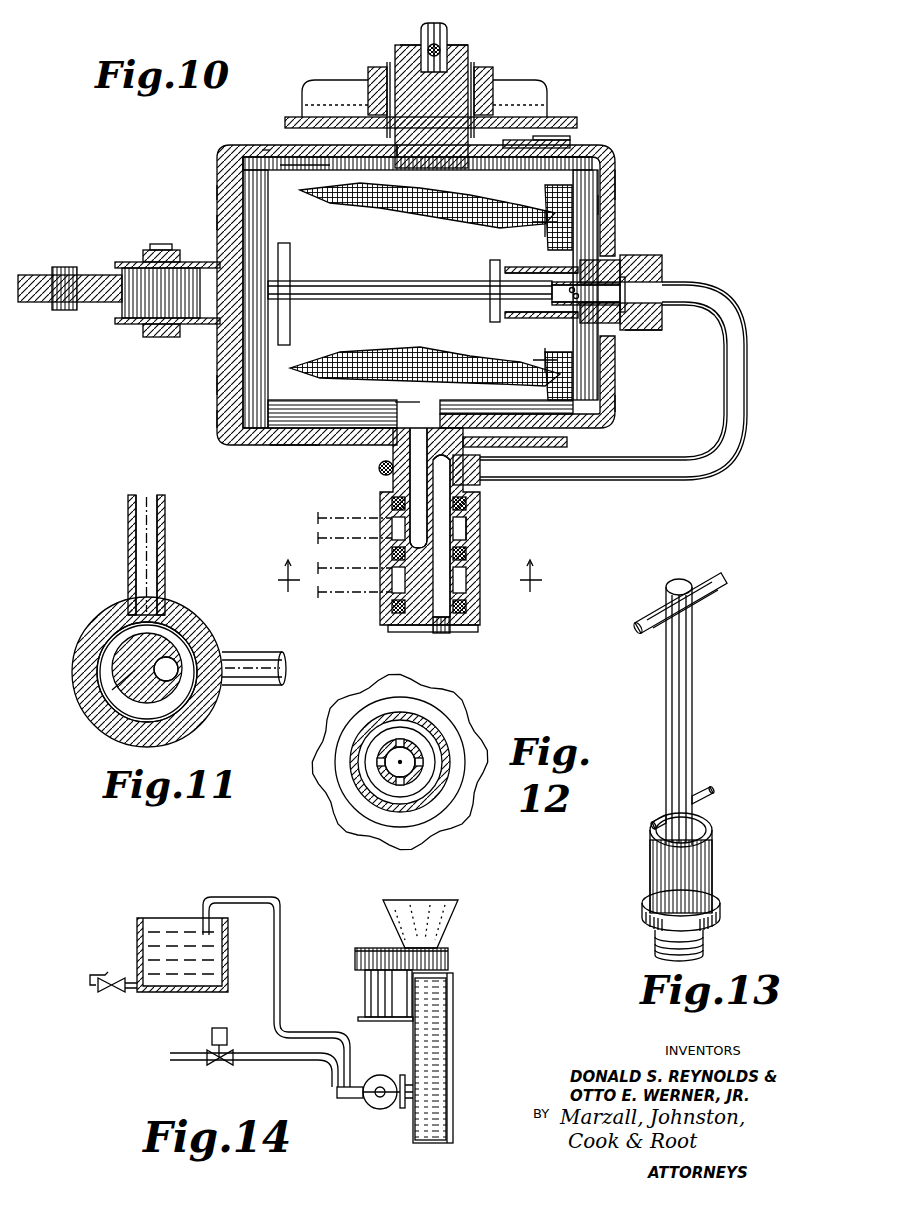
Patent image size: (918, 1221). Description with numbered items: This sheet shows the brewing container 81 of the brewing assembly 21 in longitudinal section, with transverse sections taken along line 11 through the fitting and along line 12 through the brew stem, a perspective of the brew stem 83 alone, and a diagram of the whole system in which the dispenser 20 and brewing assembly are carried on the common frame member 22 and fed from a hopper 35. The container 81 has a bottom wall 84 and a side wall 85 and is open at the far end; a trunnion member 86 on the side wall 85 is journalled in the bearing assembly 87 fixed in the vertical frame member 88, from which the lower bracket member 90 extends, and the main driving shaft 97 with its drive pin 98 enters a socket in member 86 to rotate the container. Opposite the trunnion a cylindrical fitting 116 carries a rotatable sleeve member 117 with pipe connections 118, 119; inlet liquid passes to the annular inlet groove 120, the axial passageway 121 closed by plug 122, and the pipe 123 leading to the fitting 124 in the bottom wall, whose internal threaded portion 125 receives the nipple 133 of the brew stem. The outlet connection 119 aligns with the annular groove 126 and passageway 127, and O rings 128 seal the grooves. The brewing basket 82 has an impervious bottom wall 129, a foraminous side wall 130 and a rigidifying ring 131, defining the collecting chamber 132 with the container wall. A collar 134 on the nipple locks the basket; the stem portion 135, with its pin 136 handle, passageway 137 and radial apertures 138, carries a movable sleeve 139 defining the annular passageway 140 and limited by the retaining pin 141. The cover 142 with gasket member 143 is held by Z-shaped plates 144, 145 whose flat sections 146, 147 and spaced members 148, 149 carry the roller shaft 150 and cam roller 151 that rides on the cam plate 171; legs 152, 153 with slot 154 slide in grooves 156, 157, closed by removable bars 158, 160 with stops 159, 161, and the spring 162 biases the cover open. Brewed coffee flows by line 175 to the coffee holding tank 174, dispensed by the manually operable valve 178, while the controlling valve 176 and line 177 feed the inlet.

In FIG. 10, the section line 11- 11 is at (412, 583).
In FIG. 10, the section line 12- 12 is at (539, 294).
In FIG. 14, the dispenser 20 is at (376, 945).
In FIG. 14, the brewing assembly 21 is at (393, 1075).
In FIG. 14, the frame member 22 is at (456, 1016).
In FIG. 14, the hopper 35 is at (455, 918).
In FIG. 10, the brewing container 81 is at (610, 418).
In FIG. 10, the brewing basket 82 is at (570, 165).
In FIG. 10, the brew stem 83 is at (382, 280).
In FIG. 13, the brew stem 83 is at (697, 680).
In FIG. 10, the bottom wall 84 is at (600, 205).
In FIG. 10, the side wall 85 is at (505, 150).
In FIG. 10, the trunnion member 86 is at (462, 50).
In FIG. 10, the bearing assembly 87 is at (485, 90).
In FIG. 10, the vertical frame member 88 is at (380, 90).
In FIG. 10, the lower bracket member 90 is at (325, 80).
In FIG. 10, the main driving shaft 97 is at (445, 38).
In FIG. 10, the drive pin 98 is at (425, 50).
In FIG. 10, the fitting 116 is at (410, 628).
In FIG. 11, the fitting 116 is at (95, 713).
In FIG. 10, the sleeve member 117 is at (385, 605).
In FIG. 11, the sleeve member 117 is at (85, 641).
In FIG. 10, the pipe connection 118 is at (330, 595).
In FIG. 11, the pipe connection 118 is at (128, 517).
In FIG. 10, the pipe connection 119 is at (318, 518).
In FIG. 10, the annular inlet groove 120 is at (478, 570).
In FIG. 11, the annular inlet groove 120 is at (172, 640).
In FIG. 10, the passageway 121 is at (440, 625).
In FIG. 11, the passageway 121 is at (168, 660).
In FIG. 10, the plug 122 is at (452, 628).
In FIG. 10, the pipe 123 is at (748, 405).
In FIG. 11, the pipe 123 is at (252, 662).
In FIG. 10, the fitting 124 is at (660, 262).
In FIG. 10, the internal threaded portion 125 is at (635, 325).
In FIG. 10, the annular groove 126 is at (470, 530).
In FIG. 10, the passageway 127 is at (410, 490).
In FIG. 10, the O rings 128 is at (470, 606).
In FIG. 10, the bottom wall 129 is at (612, 180).
In FIG. 12, the bottom wall 129 is at (357, 700).
In FIG. 10, the foraminous side wall 130 is at (320, 165).
In FIG. 10, the rigidifying ring 131 is at (258, 150).
In FIG. 10, the collecting chamber 132 is at (470, 215).
In FIG. 10, the nipple 133 is at (622, 262).
In FIG. 13, the nipple 133 is at (712, 932).
In FIG. 10, the collar 134 is at (600, 240).
In FIG. 12, the collar 134 is at (357, 805).
In FIG. 13, the collar 134 is at (725, 890).
In FIG. 10, the stem portion 135 is at (395, 300).
In FIG. 12, the stem portion 135 is at (410, 748).
In FIG. 13, the stem portion 135 is at (686, 733).
In FIG. 10, the pin 136 is at (290, 255).
In FIG. 13, the pin 136 is at (720, 572).
In FIG. 10, the passageway 137 is at (560, 305).
In FIG. 12, the passageway 137 is at (377, 763).
In FIG. 10, the apertures 138 is at (578, 292).
In FIG. 12, the apertures 138 is at (425, 735).
In FIG. 10, the movable sleeve 139 is at (512, 262).
In FIG. 12, the movable sleeve 139 is at (448, 795).
In FIG. 13, the movable sleeve 139 is at (703, 853).
In FIG. 10, the annular passageway 140 is at (538, 270).
In FIG. 12, the annular passageway 140 is at (420, 805).
In FIG. 13, the annular passageway 140 is at (700, 812).
In FIG. 10, the retaining pin 141 is at (490, 320).
In FIG. 13, the retaining pin 141 is at (703, 790).
In FIG. 10, the cover 142 is at (220, 168).
In FIG. 10, the resilient gasket member 143 is at (250, 150).
In FIG. 10, the Z-shaped plate 144 is at (214, 385).
In FIG. 10, the Z-shaped plate 145 is at (215, 195).
In FIG. 10, the intermediate flat section 146 is at (216, 418).
In FIG. 10, the intermediate flat section 147 is at (215, 225).
In FIG. 10, the spaced member 148 is at (120, 325).
In FIG. 10, the spaced member 149 is at (118, 262).
In FIG. 10, the roller shaft 150 is at (162, 330).
In FIG. 10, the cam roller 151 is at (140, 268).
In FIG. 10, the leg 152 is at (285, 448).
In FIG. 10, the leg 153 is at (266, 150).
In FIG. 10, the slot 154 is at (370, 448).
In FIG. 10, the groove 156 is at (400, 430).
In FIG. 10, the groove 157 is at (430, 106).
In FIG. 10, the removable bar 158 is at (570, 442).
In FIG. 10, the stop 159 is at (510, 478).
In FIG. 10, the removable bar 160 is at (560, 140).
In FIG. 10, the stop 161 is at (540, 140).
In FIG. 10, the spring 162 is at (378, 470).
In FIG. 10, the cam plate 171 is at (100, 305).
In FIG. 14, the coffee holding tank 174 is at (137, 927).
In FIG. 14, the line 175 is at (280, 998).
In FIG. 14, the solenoid operated controlling valve 176 is at (214, 1036).
In FIG. 14, the line 177 is at (278, 1062).
In FIG. 14, the manually operable valve 178 is at (116, 995).